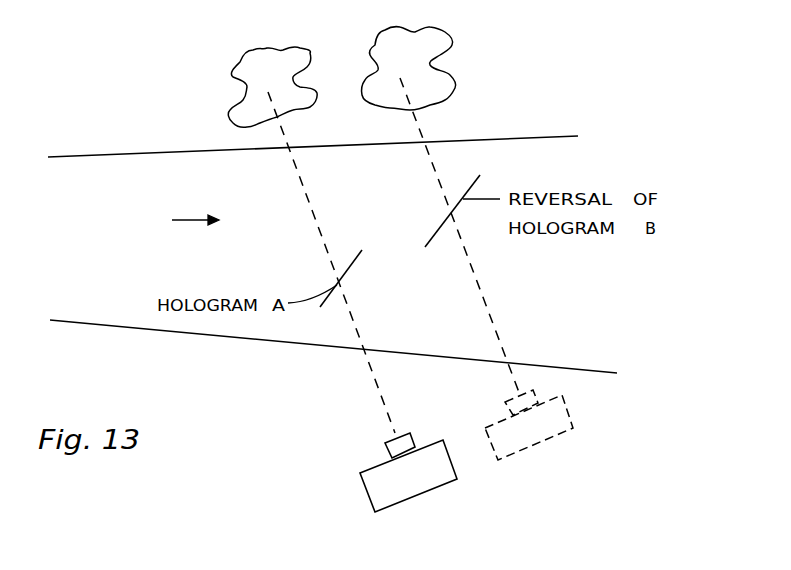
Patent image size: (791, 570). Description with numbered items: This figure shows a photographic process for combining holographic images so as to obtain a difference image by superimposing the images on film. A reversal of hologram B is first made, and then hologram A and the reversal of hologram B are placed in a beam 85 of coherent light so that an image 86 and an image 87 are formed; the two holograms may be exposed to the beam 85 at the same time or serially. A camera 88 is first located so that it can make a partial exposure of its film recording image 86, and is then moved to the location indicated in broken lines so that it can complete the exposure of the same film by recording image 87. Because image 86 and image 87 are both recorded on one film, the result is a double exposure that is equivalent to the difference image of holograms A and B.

The beam of coherent light 85 is at (138, 222).
The image 86 is at (252, 85).
The image 87 is at (425, 70).
The camera 88 is at (375, 483).